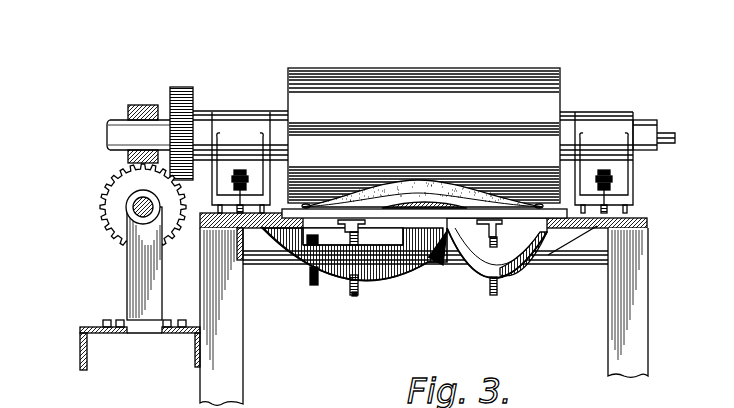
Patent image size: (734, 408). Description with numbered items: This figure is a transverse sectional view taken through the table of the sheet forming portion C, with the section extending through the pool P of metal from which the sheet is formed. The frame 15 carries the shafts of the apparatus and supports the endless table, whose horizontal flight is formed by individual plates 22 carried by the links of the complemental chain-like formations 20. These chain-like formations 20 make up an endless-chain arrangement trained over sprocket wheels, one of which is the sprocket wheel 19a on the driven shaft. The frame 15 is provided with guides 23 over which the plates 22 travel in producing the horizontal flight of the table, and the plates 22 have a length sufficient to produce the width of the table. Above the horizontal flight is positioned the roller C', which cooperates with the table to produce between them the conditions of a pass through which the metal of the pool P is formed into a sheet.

The frame 15 is at (228, 367).
The sprocket wheel 19a is at (353, 297).
The chain-like formations 20 is at (346, 231).
The plates 22 is at (387, 215).
The guides 23 is at (288, 231).
The sheet forming portion C is at (497, 267).
The roller C' is at (424, 135).
The pool of metal P is at (428, 200).